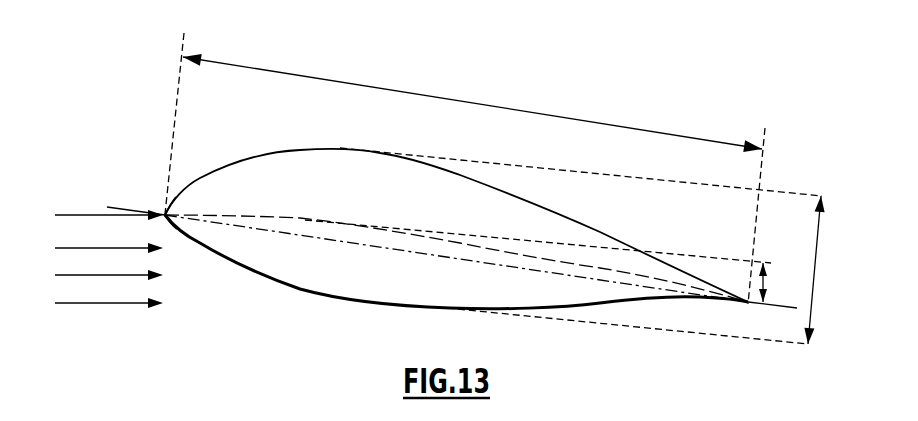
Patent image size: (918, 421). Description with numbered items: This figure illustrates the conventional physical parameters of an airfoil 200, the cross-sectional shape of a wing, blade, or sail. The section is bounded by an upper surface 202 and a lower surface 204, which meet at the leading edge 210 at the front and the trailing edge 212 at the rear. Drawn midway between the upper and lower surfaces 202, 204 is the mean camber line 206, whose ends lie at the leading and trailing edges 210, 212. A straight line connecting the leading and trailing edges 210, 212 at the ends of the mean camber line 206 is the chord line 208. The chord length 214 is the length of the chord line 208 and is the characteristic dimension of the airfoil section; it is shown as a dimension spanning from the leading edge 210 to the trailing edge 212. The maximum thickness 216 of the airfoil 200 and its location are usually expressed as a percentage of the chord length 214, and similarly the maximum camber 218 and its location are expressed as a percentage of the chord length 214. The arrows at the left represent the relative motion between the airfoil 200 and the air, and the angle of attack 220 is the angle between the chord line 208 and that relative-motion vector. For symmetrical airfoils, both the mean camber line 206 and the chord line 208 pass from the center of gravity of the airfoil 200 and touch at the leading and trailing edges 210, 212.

The airfoil 200 is at (423, 172).
The upper surface 202 is at (266, 152).
The lower surface 204 is at (288, 290).
The mean camber line 206 is at (238, 212).
The chord line 208 is at (277, 234).
The leading edge 210 is at (163, 211).
The trailing edge 212 is at (746, 305).
The chord length 214 is at (372, 86).
The maximum thickness 216 is at (813, 267).
The maximum camber 218 is at (768, 288).
The angle of attack 220 is at (108, 207).